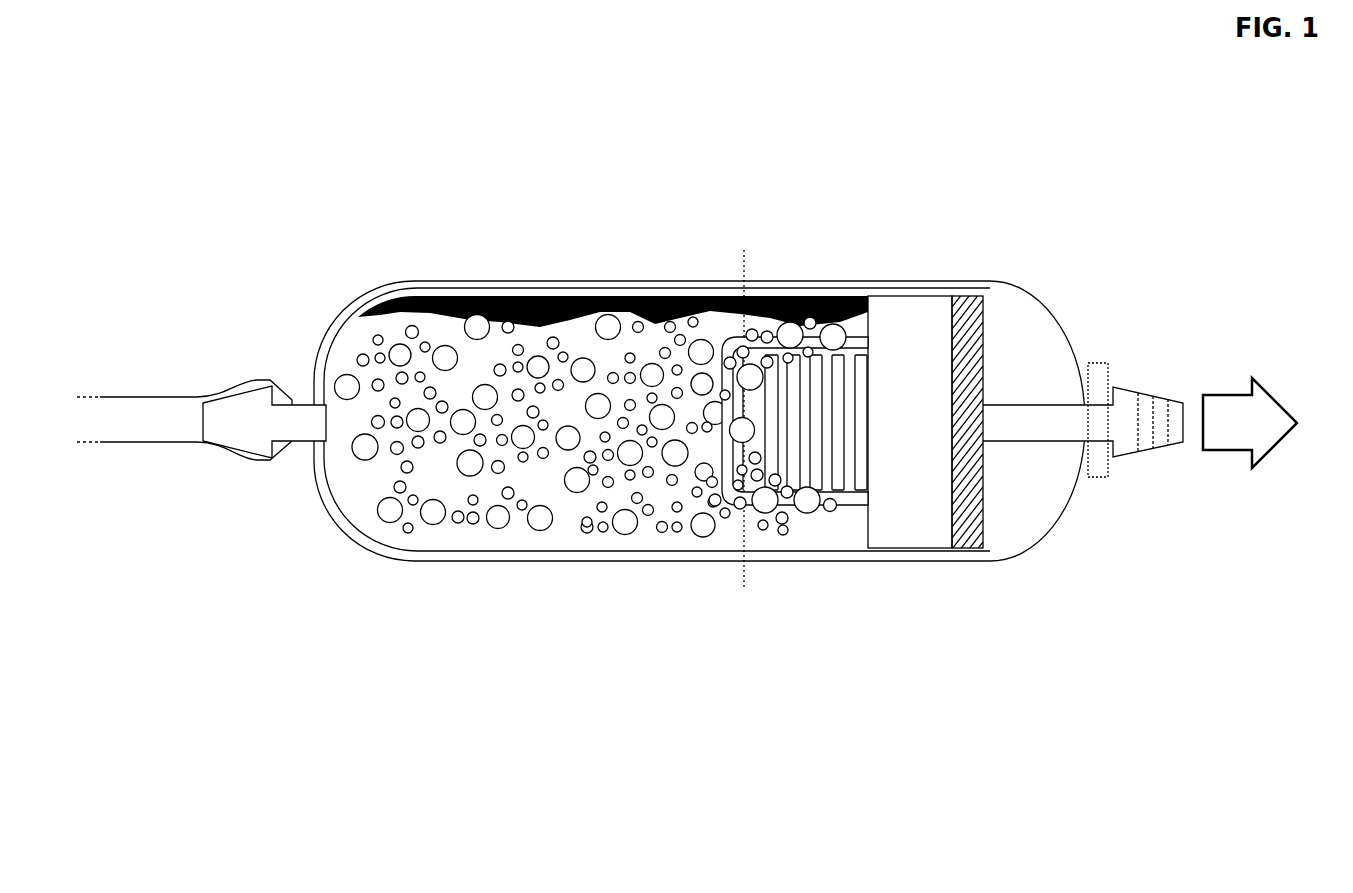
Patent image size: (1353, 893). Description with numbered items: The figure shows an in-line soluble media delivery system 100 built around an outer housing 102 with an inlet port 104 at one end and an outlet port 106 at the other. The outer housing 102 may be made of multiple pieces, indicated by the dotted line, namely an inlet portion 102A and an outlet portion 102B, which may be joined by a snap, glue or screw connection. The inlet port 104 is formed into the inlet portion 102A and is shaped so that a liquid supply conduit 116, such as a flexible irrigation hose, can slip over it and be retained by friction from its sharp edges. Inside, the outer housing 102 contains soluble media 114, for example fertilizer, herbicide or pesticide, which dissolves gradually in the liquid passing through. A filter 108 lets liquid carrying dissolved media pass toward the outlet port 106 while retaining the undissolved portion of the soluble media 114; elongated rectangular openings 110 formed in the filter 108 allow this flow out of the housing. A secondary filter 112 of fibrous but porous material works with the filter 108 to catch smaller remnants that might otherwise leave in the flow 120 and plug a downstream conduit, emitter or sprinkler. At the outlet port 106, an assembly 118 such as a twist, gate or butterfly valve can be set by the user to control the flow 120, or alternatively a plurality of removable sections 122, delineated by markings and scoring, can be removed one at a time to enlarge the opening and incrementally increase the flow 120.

The in-line soluble media delivery system 100 is at (283, 206).
The outer housing 102 is at (283, 303).
The inlet portion 102A is at (728, 273).
The outlet portion 102B is at (805, 273).
The inlet port 104 is at (217, 378).
The outlet port 106 is at (1093, 421).
The filter 108 is at (1030, 240).
The openings 110 is at (933, 390).
The secondary filter 112 is at (1052, 355).
The soluble media 114 is at (257, 563).
The liquid supply conduit 116 is at (133, 479).
The assembly 118 is at (1167, 350).
The flow 120 is at (1262, 433).
The removable sections 122 is at (1203, 483).